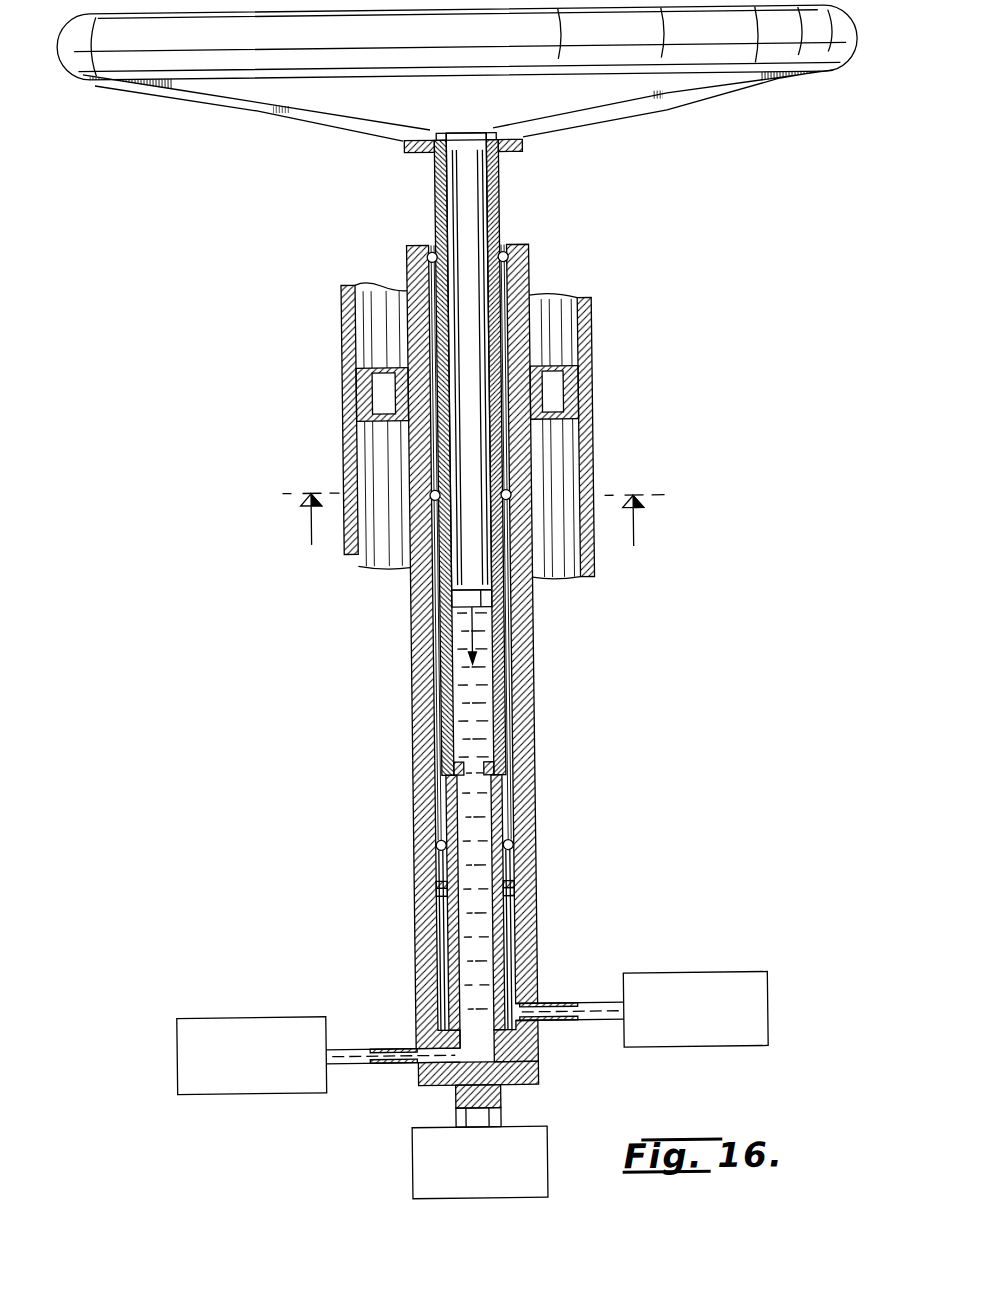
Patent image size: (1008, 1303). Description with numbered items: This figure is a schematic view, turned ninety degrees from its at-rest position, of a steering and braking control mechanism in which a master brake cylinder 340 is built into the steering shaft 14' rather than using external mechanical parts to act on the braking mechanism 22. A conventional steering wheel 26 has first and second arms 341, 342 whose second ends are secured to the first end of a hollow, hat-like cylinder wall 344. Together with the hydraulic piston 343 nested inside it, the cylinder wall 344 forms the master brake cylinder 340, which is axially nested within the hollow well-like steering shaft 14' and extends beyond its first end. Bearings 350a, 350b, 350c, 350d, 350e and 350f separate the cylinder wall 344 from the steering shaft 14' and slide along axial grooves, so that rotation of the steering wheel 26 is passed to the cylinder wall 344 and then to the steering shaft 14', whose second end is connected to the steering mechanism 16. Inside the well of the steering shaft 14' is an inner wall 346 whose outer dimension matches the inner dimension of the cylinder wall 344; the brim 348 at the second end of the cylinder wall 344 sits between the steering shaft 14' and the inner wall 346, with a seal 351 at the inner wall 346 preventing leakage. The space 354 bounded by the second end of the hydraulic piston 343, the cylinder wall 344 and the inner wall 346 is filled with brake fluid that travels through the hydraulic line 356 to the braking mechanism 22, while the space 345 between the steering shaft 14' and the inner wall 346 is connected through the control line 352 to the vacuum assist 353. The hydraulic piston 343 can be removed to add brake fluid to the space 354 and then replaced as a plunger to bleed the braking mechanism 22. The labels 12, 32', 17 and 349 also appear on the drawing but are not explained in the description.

The steering wheel 26 is at (481, 76).
The second arm 342 is at (298, 120).
The first arm 341 is at (634, 115).
The cylinder wall 344 is at (506, 153).
The master brake cylinder 340 is at (431, 200).
The hydraulic piston 343 is at (483, 210).
The steering shaft 14' is at (510, 541).
The hub 12 is at (590, 331).
The steering and brake assembly 32' is at (429, 431).
The section line for FIG. 17 is at (473, 510).
The bearing 350a is at (519, 258).
The bearing 350b is at (411, 248).
The bearing 350c is at (509, 501).
The bearing 350d is at (426, 500).
The bearing 350e is at (504, 844).
The bearing 350f is at (428, 845).
The space 354 is at (481, 672).
The seal 351 is at (488, 773).
The inner wall 346 is at (449, 930).
The brim 348 is at (499, 898).
The piston seal 349 is at (512, 886).
The space 345 is at (528, 966).
The hydraulic line 356 is at (380, 1044).
The braking mechanism 22 is at (237, 1015).
The control line 352 is at (565, 1023).
The vacuum assist 353 is at (696, 976).
The steering mechanism 16 is at (401, 1151).